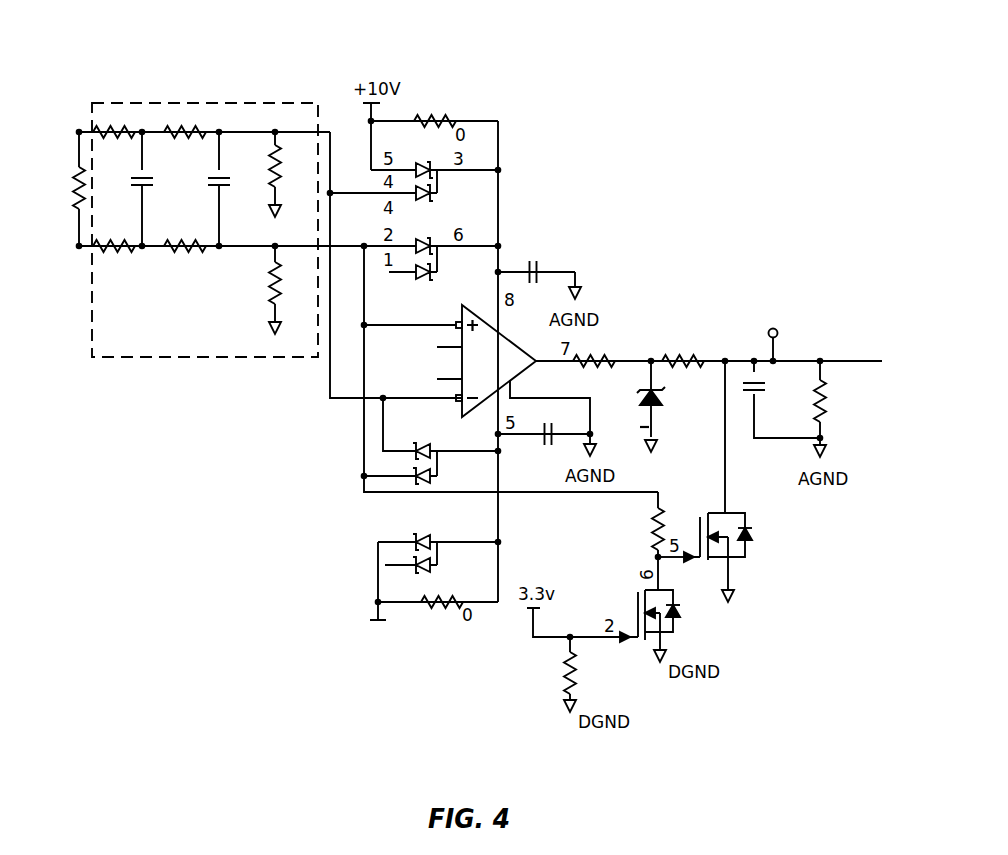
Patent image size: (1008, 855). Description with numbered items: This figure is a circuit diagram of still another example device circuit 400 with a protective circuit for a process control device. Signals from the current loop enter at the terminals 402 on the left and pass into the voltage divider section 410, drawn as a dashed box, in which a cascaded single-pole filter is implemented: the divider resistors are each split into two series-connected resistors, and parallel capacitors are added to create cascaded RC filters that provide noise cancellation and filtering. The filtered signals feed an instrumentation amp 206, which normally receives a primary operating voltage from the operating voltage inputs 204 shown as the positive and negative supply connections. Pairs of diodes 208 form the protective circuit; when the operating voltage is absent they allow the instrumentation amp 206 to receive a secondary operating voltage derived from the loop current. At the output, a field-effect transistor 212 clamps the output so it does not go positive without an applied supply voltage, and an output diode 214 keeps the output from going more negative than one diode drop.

The device circuit 400 is at (312, 40).
The input terminals 402 is at (79, 132).
The voltage divider section 410 is at (243, 103).
The instrumentation amp 206 is at (462, 357).
The diodes 208 is at (402, 463).
The operating voltage inputs 204 is at (378, 650).
The output diode 214 is at (652, 390).
The field-effect transistor 212 is at (745, 545).